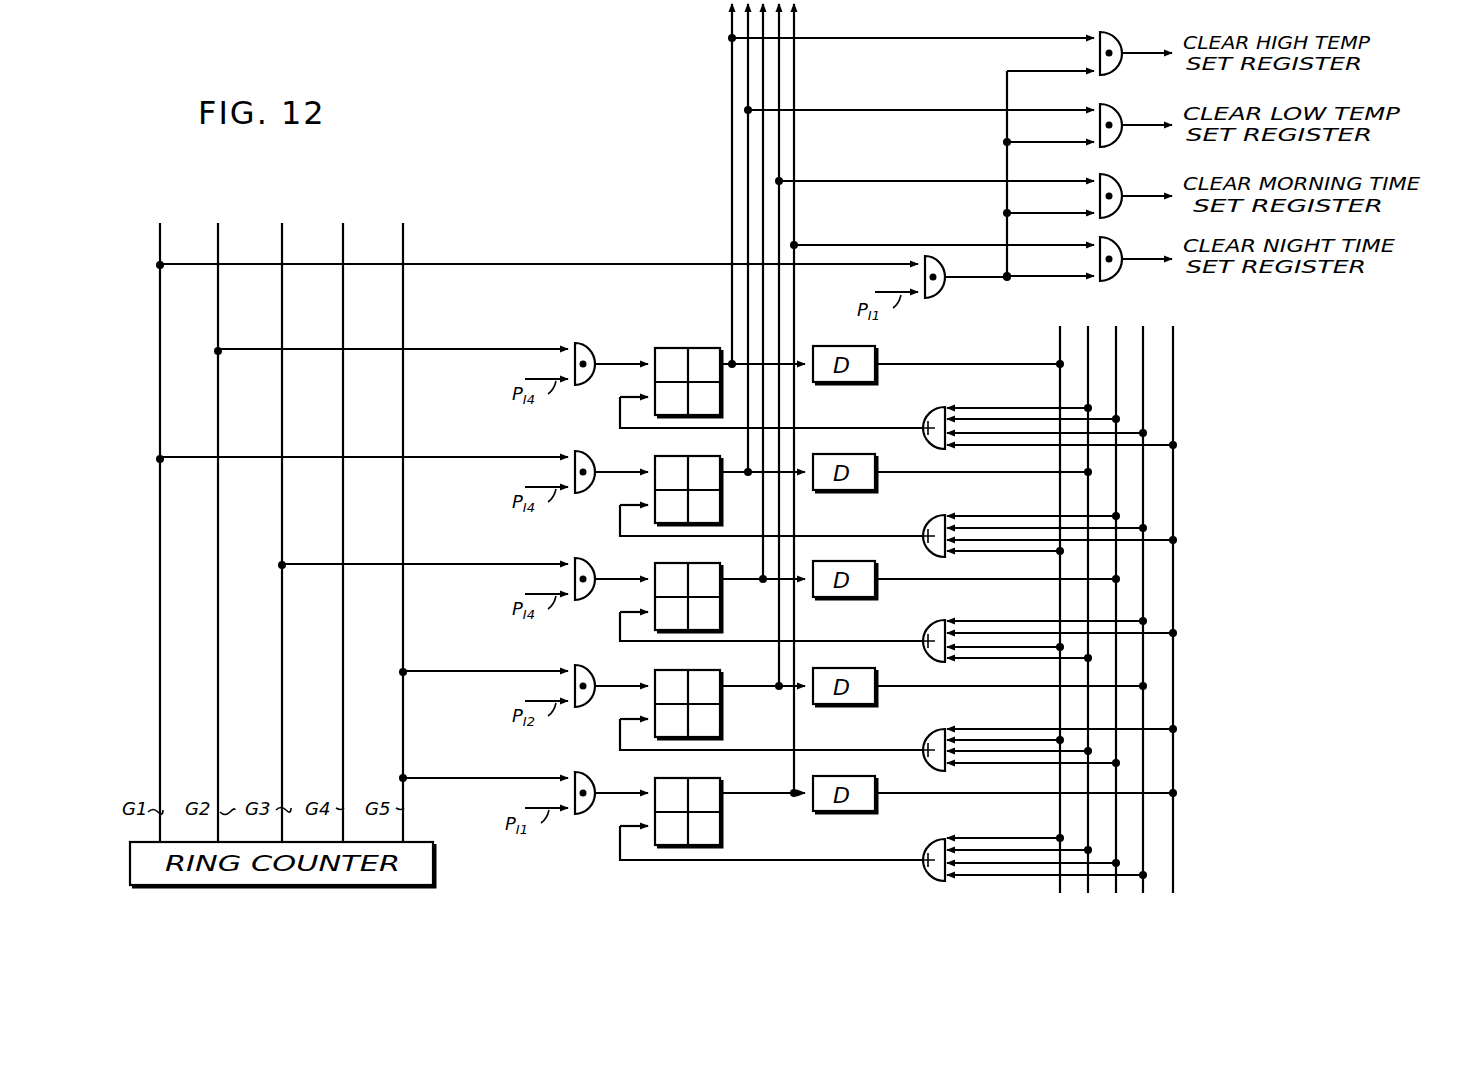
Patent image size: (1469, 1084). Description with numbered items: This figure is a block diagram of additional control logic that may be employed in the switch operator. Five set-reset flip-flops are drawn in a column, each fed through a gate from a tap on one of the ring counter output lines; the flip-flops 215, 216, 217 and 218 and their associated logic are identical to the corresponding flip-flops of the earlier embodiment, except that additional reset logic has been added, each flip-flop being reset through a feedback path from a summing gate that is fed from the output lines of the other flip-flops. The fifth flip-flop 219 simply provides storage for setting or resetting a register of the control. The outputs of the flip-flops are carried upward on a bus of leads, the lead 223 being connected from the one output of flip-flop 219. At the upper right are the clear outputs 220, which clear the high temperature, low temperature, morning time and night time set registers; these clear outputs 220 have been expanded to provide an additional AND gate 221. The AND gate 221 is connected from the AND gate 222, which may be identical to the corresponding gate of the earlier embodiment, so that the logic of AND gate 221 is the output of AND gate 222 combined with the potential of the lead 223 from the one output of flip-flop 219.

The flip-flop 215 is at (654, 457).
The flip-flop 216 is at (654, 564).
The flip-flop 217 is at (654, 671).
The flip-flop 218 is at (654, 778).
The flip-flop 219 is at (706, 348).
The clear outputs 220 is at (1062, 141).
The AND gate 221 is at (1122, 40).
The AND gate 222 is at (943, 292).
The lead 223 is at (732, 64).